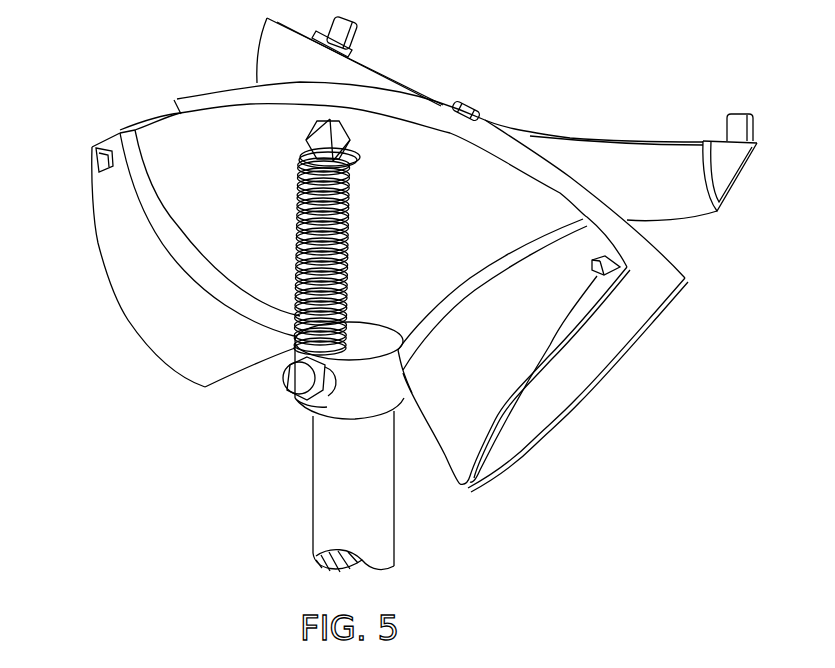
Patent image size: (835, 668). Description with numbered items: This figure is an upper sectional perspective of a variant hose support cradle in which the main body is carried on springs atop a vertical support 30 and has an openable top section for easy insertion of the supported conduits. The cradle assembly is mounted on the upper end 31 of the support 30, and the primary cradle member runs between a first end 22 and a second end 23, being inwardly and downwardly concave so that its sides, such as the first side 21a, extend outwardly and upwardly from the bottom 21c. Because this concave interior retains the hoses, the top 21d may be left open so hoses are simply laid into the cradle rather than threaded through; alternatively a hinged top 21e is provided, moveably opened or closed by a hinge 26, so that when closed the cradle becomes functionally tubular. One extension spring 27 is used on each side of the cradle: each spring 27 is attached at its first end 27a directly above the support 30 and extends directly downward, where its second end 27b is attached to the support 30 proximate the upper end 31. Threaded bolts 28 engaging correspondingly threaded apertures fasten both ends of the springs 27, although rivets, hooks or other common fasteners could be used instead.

The first side 21a is at (187, 217).
The bottom 21c is at (213, 355).
The top 21d is at (523, 158).
The hinged top 21e is at (762, 145).
The first end 22 is at (128, 316).
The second end 23 is at (552, 430).
The hinge 26 is at (468, 103).
The extension spring 27 is at (346, 275).
The first end of spring 27a is at (352, 152).
The second end of spring 27b is at (660, 317).
The threaded bolt 28 is at (316, 128).
The support 30 is at (302, 548).
The upper end 31 is at (353, 405).